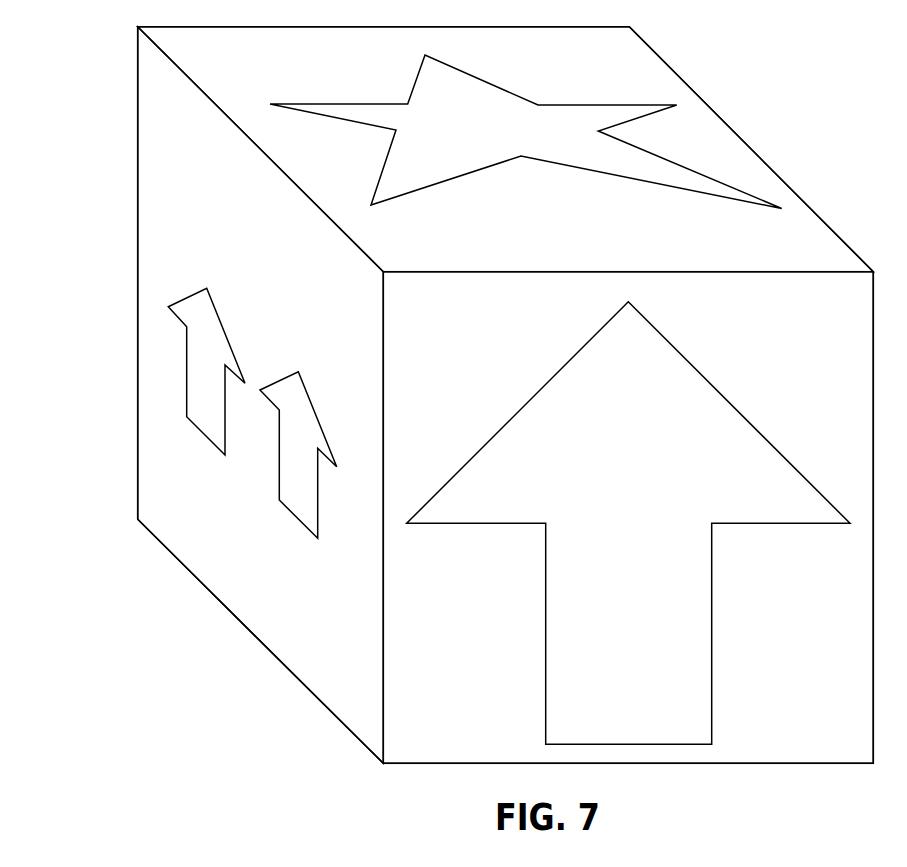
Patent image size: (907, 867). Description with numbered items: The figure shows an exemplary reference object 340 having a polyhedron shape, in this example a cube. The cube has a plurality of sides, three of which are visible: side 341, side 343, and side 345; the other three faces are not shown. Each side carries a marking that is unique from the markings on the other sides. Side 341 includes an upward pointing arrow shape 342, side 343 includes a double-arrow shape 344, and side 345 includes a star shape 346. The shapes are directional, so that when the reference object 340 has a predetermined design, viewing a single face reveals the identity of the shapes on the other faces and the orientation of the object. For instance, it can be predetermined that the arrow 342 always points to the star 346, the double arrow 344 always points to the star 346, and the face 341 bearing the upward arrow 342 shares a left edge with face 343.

The reference object 340 is at (450, 404).
The side 341 is at (628, 518).
The arrow shape 342 is at (628, 523).
The side 343 is at (261, 395).
The double-arrow shape 344 is at (252, 413).
The side 345 is at (506, 149).
The star shape 346 is at (526, 132).